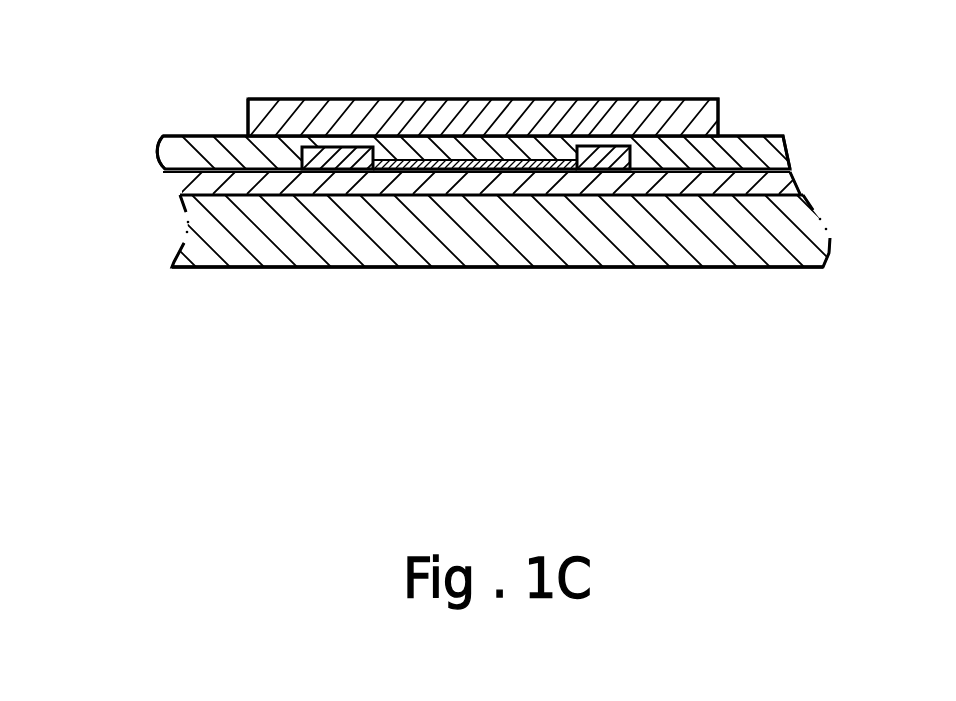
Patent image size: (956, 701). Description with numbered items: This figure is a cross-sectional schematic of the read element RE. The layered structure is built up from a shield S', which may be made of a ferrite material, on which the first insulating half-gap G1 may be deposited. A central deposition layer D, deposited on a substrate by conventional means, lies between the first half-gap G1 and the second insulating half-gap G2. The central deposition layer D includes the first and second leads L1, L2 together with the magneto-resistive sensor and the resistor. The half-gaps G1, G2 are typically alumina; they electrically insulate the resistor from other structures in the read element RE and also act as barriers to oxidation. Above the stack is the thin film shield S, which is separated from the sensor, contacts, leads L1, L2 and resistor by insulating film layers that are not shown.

The central deposition layer D is at (133, 157).
The thin film shield S is at (491, 79).
The shield S' is at (496, 273).
The first insulating half-gap G1 is at (770, 181).
The second insulating half-gap G2 is at (772, 148).
The first lead L1 is at (335, 157).
The second lead L2 is at (612, 158).
The read element RE is at (432, 163).